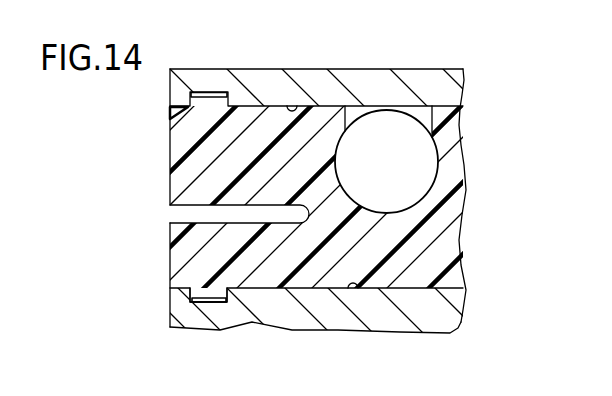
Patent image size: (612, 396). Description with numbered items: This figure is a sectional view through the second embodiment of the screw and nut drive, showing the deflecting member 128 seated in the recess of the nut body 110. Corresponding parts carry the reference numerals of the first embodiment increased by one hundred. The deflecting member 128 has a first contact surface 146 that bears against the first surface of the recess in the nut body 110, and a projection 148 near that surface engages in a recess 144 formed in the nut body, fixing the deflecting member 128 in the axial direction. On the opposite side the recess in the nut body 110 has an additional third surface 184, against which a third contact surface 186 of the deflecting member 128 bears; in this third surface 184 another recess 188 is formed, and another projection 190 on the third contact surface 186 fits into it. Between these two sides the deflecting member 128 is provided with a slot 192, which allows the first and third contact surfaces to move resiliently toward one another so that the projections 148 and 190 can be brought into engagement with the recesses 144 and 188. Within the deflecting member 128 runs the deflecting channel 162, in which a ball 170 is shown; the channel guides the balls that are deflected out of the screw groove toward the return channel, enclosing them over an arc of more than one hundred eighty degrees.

The nut body 110 is at (266, 76).
The deflecting member 128 is at (178, 172).
The recess 144 is at (212, 92).
The first contact surface 146 is at (296, 108).
The projection 148 is at (173, 116).
The deflecting channel 162 is at (438, 180).
The ball 170 is at (393, 128).
The third surface 184 is at (318, 290).
The third contact surface 186 is at (375, 292).
The recess 188 is at (200, 298).
The projection 190 is at (206, 287).
The slot 192 is at (177, 214).